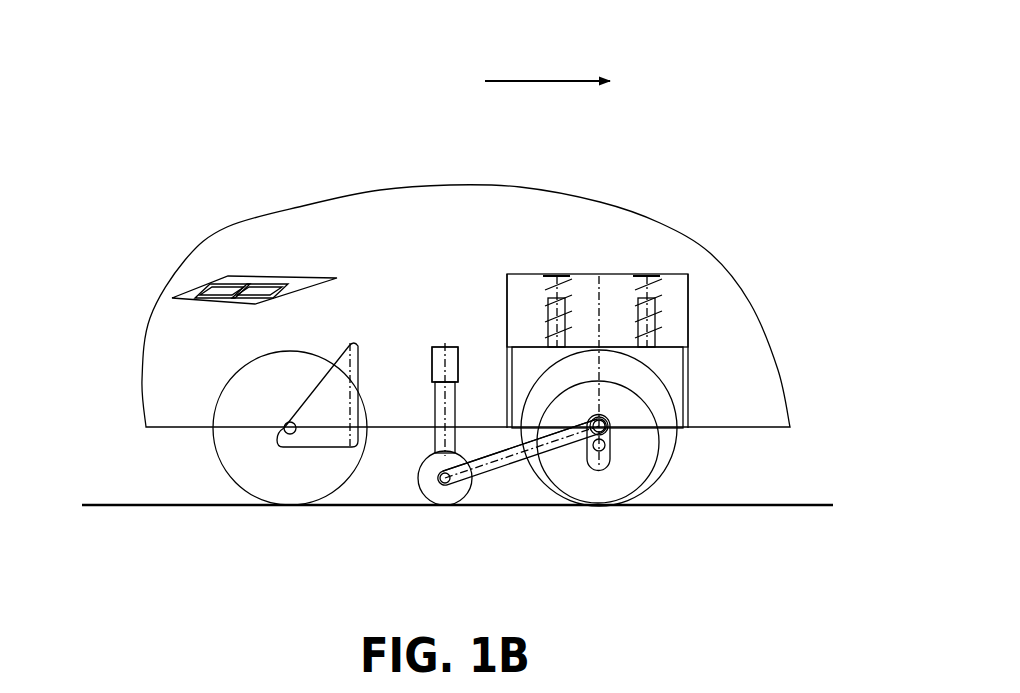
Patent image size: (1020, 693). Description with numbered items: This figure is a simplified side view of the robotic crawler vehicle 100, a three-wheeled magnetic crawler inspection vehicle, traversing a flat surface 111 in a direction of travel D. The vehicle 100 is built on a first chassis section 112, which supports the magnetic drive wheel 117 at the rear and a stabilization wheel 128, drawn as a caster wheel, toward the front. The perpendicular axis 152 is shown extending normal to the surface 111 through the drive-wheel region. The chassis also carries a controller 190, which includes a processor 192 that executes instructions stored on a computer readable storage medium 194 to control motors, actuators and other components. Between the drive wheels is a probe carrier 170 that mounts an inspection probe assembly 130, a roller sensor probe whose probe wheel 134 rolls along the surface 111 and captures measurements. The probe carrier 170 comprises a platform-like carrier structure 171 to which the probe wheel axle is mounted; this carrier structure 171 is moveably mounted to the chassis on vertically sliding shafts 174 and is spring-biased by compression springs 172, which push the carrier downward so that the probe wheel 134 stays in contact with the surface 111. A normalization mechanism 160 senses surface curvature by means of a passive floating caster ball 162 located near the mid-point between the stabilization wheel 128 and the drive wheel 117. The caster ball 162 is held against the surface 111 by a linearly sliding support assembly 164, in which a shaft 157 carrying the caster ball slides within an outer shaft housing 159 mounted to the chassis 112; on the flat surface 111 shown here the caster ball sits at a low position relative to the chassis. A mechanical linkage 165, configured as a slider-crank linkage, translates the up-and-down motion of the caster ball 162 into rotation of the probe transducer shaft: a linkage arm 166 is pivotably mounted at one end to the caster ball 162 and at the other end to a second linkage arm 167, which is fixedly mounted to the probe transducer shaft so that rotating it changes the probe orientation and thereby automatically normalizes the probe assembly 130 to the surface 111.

The robotic crawler vehicle 100 is at (232, 88).
The direction of travel D is at (553, 80).
The surface 111 is at (120, 498).
The first chassis section 112 is at (443, 181).
The magnetic drive wheel 117 is at (658, 401).
The stabilization wheel 128 is at (229, 471).
The inspection probe assembly 130 is at (672, 448).
The probe wheel 134 is at (641, 461).
The perpendicular axis 152 is at (602, 285).
The shaft 157 is at (430, 440).
The outer shaft housing 159 is at (431, 358).
The normalization mechanism 160 is at (406, 452).
The caster ball 162 is at (420, 481).
The linearly sliding support assembly 164 is at (437, 341).
The mechanical linkage 165 is at (526, 486).
The linkage arm 166 is at (476, 478).
The second linkage arm 167 is at (600, 468).
The probe carrier 170 is at (561, 274).
The carrier structure 171 is at (668, 366).
The spring 172 is at (667, 289).
The shaft 174 is at (656, 335).
The controller 190 is at (268, 276).
The processor 192 is at (212, 288).
The storage medium 194 is at (254, 288).